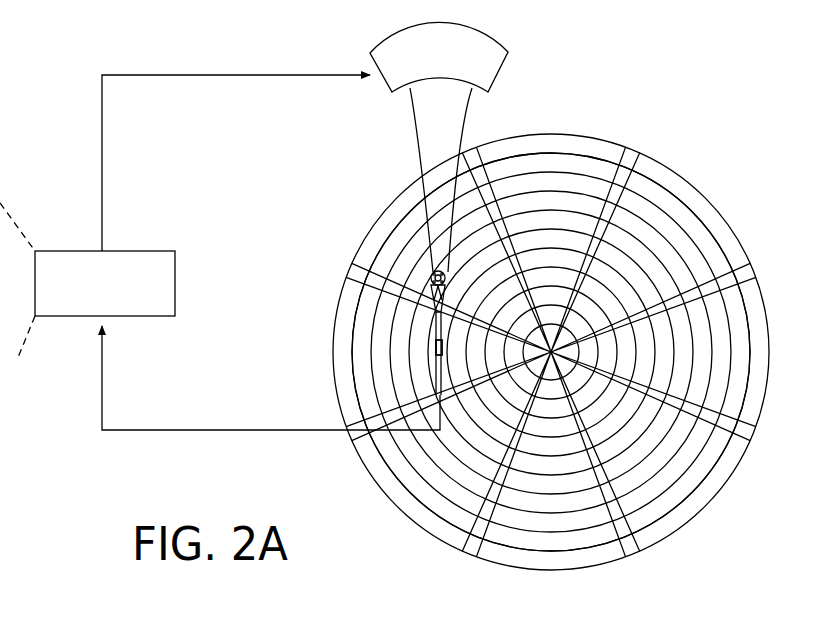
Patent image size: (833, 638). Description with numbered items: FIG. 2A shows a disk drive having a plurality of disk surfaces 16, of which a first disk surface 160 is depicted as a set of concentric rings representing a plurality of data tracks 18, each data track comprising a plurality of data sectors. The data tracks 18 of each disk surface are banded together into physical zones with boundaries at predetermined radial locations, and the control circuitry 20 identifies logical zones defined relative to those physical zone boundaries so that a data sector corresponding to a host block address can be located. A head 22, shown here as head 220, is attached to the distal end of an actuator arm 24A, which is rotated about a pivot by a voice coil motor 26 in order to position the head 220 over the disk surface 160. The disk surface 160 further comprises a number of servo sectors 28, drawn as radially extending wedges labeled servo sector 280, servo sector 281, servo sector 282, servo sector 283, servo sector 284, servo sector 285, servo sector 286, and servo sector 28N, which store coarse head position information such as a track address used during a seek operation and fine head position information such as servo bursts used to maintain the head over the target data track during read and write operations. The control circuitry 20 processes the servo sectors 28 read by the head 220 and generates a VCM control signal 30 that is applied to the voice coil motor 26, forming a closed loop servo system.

The disk surface 16 is at (702, 181).
The disk surface 160 is at (551, 352).
The data tracks 18 is at (550, 160).
The control circuitry 20 is at (146, 251).
The head 22 is at (432, 358).
The head 220 is at (414, 334).
The actuator arm 24A is at (422, 165).
The voice coil motor 26 is at (386, 89).
The servo sectors 28 is at (561, 354).
The servo sector 280 is at (637, 143).
The servo sector 281 is at (746, 272).
The servo sector 282 is at (746, 438).
The servo sector 283 is at (630, 552).
The servo sector 284 is at (472, 556).
The servo sector 285 is at (354, 438).
The servo sector 286 is at (355, 264).
The servo sector 28N is at (473, 153).
The VCM control signal 30 is at (102, 149).